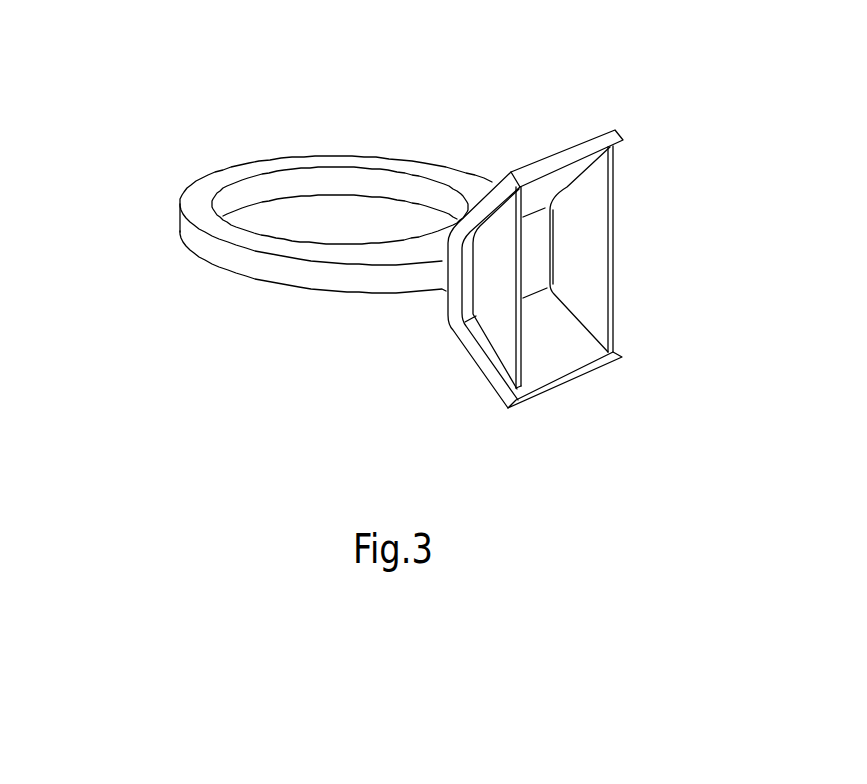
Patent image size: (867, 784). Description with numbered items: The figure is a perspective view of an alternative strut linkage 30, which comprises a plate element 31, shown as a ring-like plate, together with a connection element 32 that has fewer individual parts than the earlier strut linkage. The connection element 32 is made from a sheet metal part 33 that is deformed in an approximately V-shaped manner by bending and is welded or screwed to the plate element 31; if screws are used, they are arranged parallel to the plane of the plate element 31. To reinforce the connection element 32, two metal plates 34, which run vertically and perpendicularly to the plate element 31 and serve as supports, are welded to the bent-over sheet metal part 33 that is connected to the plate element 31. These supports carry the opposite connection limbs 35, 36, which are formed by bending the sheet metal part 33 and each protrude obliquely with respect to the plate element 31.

The strut linkage 30 is at (150, 289).
The plate element 31 is at (207, 191).
The connection element 32 is at (682, 319).
The sheet metal part 33 is at (447, 370).
The metal plates 34 is at (500, 270).
The connection limb 35 is at (552, 123).
The connection limb 36 is at (582, 408).